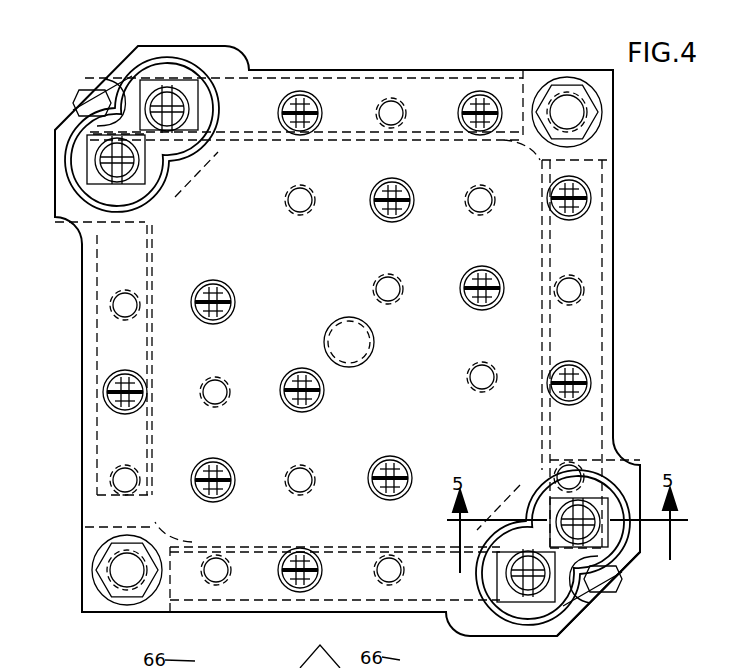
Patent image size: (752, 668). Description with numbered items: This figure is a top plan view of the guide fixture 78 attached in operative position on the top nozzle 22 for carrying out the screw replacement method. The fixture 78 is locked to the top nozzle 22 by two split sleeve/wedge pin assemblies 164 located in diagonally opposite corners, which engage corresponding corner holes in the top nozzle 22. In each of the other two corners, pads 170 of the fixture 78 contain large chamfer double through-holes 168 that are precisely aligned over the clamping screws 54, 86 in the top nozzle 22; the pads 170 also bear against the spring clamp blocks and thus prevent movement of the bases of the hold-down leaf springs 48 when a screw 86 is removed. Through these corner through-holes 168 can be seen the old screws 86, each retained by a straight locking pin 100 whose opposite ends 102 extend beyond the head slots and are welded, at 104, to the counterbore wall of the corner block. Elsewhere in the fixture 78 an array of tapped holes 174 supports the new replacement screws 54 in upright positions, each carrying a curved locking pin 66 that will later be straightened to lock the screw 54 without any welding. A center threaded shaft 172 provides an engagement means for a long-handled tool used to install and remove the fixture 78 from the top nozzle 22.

The top nozzle 22 is at (622, 588).
The leaf springs 48 is at (283, 62).
The spring clamping screw 54 is at (588, 190).
The locking pin 66 is at (404, 220).
The guide fixture 78 is at (628, 326).
The old screw 86 is at (183, 80).
The locking pin 100 is at (170, 168).
The opposite ends 102 is at (90, 125).
The weld 104 is at (95, 168).
The split sleeve/wedge pin assemblies 164 is at (598, 104).
The chamfer double through-holes 168 is at (122, 92).
The pads 170 is at (178, 46).
The center threaded shaft 172 is at (347, 318).
The tapped holes 174 is at (216, 388).